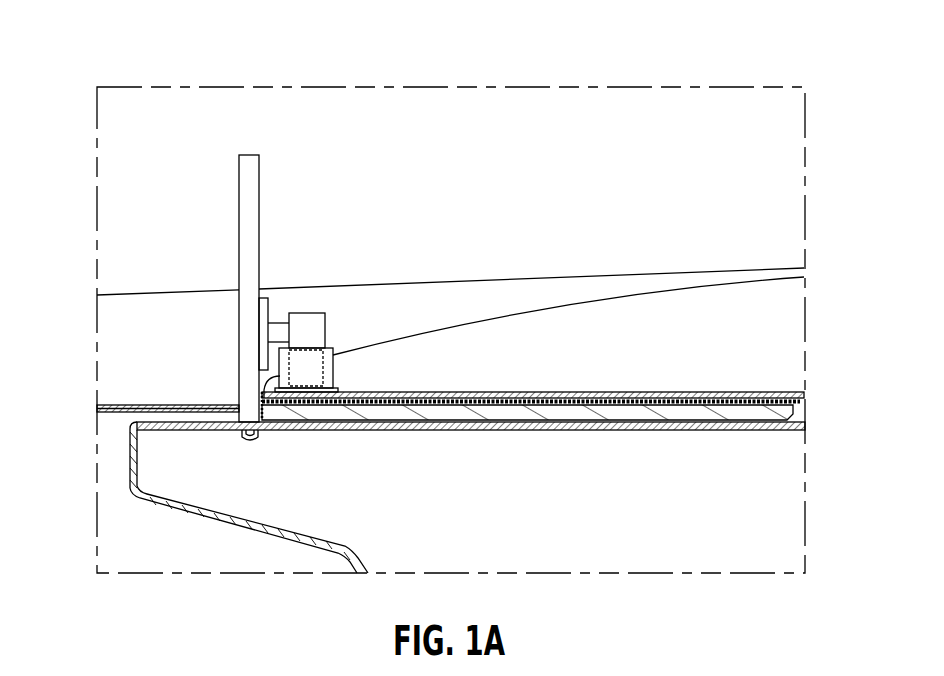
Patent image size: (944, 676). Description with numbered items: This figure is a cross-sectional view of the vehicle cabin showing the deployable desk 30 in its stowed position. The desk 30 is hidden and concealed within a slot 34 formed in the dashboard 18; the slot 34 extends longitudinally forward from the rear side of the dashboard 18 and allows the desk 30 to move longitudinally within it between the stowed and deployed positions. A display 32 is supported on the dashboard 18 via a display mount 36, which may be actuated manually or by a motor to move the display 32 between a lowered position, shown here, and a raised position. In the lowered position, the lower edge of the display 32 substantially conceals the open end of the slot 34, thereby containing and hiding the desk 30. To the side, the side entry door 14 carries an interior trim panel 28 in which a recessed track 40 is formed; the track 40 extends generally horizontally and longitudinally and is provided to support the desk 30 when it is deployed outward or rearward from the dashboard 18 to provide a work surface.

The side entry door 14 is at (724, 268).
The dashboard 18 is at (775, 393).
The trim panel 28 is at (422, 300).
The deployable desk 30 is at (723, 410).
The display 32 is at (238, 195).
The slot 34 is at (259, 403).
The display mount 36 is at (306, 313).
The recessed track 40 is at (113, 413).